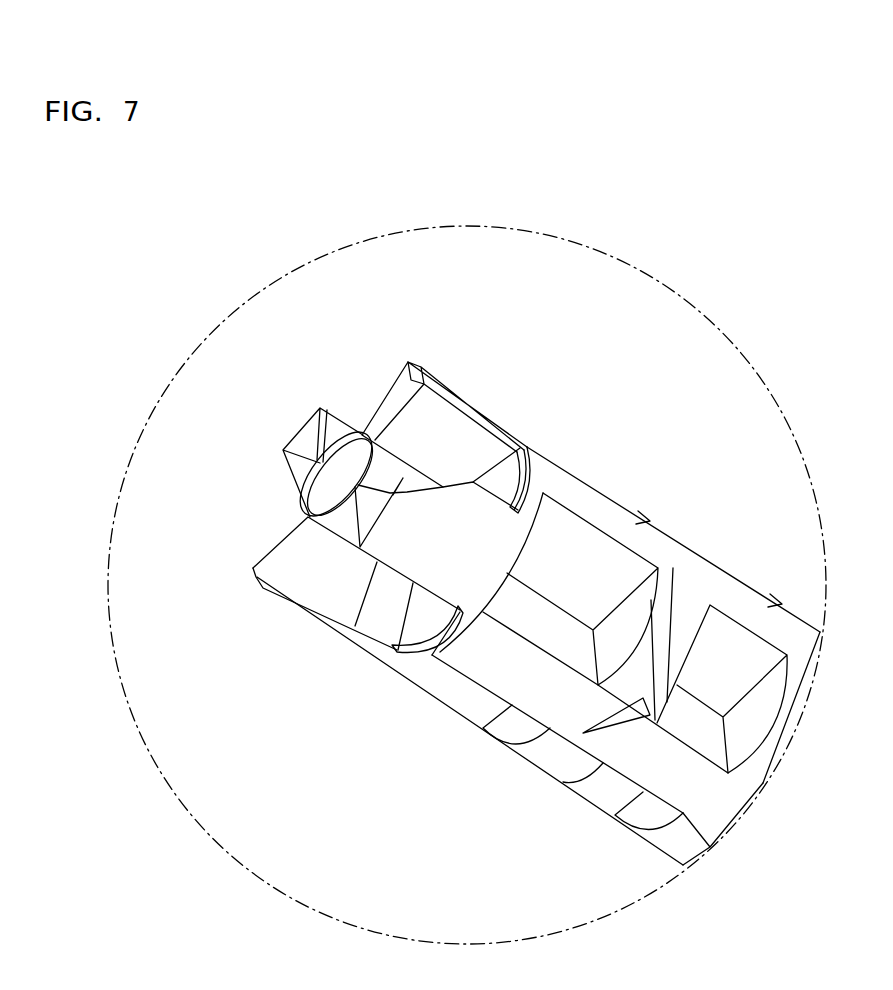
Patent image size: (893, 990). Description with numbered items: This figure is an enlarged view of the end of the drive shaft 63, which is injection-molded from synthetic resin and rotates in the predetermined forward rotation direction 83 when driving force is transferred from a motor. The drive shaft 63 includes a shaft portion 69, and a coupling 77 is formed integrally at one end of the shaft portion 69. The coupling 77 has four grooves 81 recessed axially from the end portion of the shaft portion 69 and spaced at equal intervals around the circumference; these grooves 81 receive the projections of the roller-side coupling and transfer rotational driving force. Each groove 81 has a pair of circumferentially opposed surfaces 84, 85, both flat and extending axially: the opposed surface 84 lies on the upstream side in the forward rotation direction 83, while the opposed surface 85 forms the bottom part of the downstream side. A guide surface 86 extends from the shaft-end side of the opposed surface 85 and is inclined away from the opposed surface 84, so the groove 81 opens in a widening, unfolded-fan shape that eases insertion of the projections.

The drive shaft 63 is at (482, 858).
The shaft portion 69 is at (612, 513).
The coupling 77 is at (318, 325).
The groove 81 is at (367, 375).
The forward rotation direction 83 is at (673, 610).
The opposed surface 84 is at (440, 428).
The opposed surface 85 is at (490, 490).
The guide surface 86 is at (443, 490).